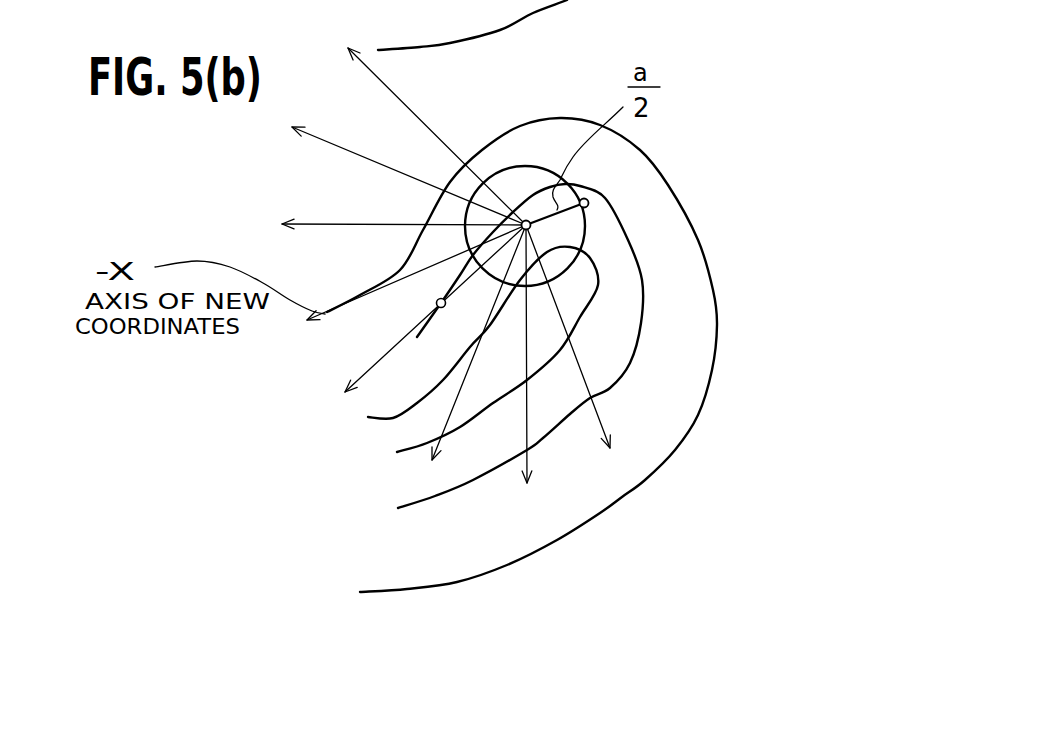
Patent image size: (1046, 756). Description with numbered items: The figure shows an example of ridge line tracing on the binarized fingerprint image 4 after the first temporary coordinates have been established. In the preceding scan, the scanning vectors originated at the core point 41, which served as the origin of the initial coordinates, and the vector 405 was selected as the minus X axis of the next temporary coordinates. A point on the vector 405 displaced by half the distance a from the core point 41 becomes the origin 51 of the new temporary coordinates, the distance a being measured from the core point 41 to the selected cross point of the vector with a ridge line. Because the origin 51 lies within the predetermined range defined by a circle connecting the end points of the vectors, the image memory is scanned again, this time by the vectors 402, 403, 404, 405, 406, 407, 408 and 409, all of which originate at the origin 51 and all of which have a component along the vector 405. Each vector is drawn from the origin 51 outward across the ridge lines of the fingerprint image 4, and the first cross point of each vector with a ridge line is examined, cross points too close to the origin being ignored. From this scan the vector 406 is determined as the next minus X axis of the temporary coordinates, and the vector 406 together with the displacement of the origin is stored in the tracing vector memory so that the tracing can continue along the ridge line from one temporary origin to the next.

The fingerprint image 4 is at (660, 467).
The core point 41 is at (589, 200).
The origin of the new temporary coordinates 51 is at (530, 226).
The vector 402 is at (373, 67).
The vector 403 is at (327, 137).
The vector 404 is at (305, 223).
The vector 405 is at (327, 323).
The vector 406 is at (365, 368).
The vector 407 is at (431, 455).
The vector 408 is at (529, 454).
The vector 409 is at (605, 422).